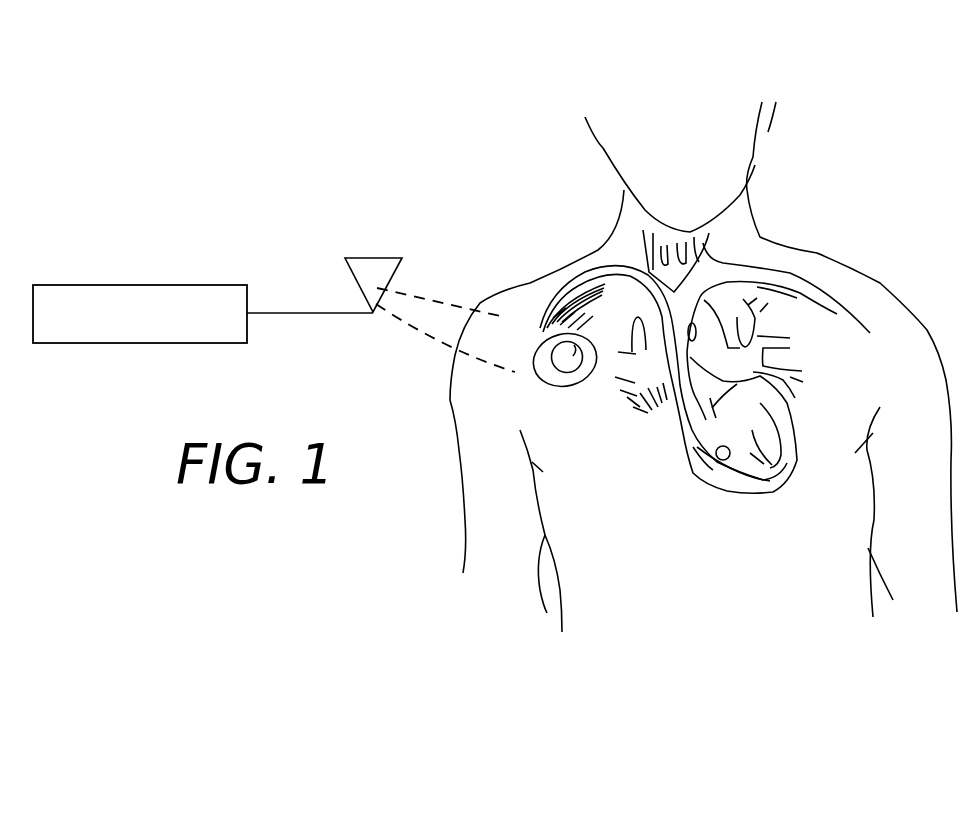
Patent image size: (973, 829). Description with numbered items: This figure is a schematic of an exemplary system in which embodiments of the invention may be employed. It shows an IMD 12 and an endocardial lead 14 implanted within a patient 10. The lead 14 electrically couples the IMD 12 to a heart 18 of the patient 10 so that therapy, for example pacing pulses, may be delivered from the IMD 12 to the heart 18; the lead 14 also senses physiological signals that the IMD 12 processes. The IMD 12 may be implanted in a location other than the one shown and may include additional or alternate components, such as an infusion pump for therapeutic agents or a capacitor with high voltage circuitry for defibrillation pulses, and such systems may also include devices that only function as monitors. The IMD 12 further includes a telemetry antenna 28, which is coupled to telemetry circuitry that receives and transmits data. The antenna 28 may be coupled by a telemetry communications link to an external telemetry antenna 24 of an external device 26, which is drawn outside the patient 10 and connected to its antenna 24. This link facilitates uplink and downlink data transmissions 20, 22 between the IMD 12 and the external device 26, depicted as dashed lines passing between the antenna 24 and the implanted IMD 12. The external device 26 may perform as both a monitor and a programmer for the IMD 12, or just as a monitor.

The patient 10 is at (779, 84).
The IMD 12 is at (582, 384).
The endocardial lead 14 is at (578, 281).
The heart 18 is at (710, 483).
The uplink data transmission 20 is at (469, 303).
The downlink data transmission 22 is at (495, 365).
The external telemetry antenna 24 is at (362, 291).
The external device 26 is at (127, 285).
The telemetry antenna 28 is at (597, 303).